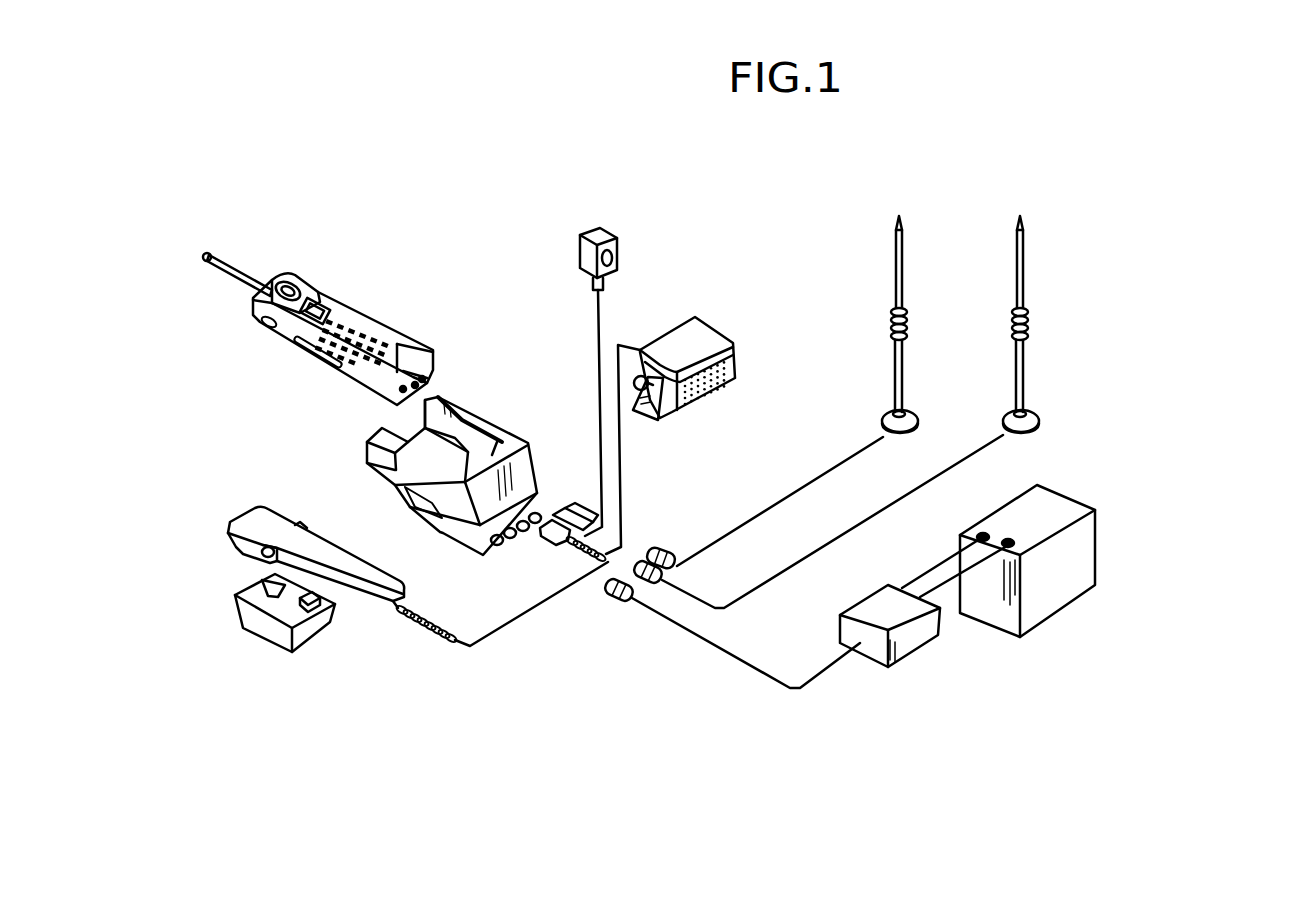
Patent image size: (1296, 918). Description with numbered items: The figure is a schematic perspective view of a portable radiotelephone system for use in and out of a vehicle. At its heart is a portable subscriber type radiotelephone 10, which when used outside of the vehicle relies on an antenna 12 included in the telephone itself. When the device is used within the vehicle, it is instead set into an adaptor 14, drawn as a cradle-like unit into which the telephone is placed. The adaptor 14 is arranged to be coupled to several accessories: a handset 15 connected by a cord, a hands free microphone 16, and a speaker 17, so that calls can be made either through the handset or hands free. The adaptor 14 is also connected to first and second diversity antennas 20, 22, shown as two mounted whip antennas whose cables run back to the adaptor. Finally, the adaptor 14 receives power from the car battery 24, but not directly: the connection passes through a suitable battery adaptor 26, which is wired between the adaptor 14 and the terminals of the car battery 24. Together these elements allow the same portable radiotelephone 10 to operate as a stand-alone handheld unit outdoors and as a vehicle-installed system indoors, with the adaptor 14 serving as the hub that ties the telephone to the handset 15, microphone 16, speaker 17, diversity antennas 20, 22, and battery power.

The portable subscriber type radiotelephone 10 is at (333, 296).
The antenna 12 is at (230, 262).
The adaptor 14 is at (487, 414).
The handset 15 is at (272, 508).
The hands free microphone 16 is at (580, 258).
The speaker 17 is at (705, 325).
The first diversity antenna 20 is at (897, 287).
The second diversity antenna 22 is at (1023, 282).
The car battery 24 is at (1053, 618).
The battery adaptor 26 is at (920, 650).